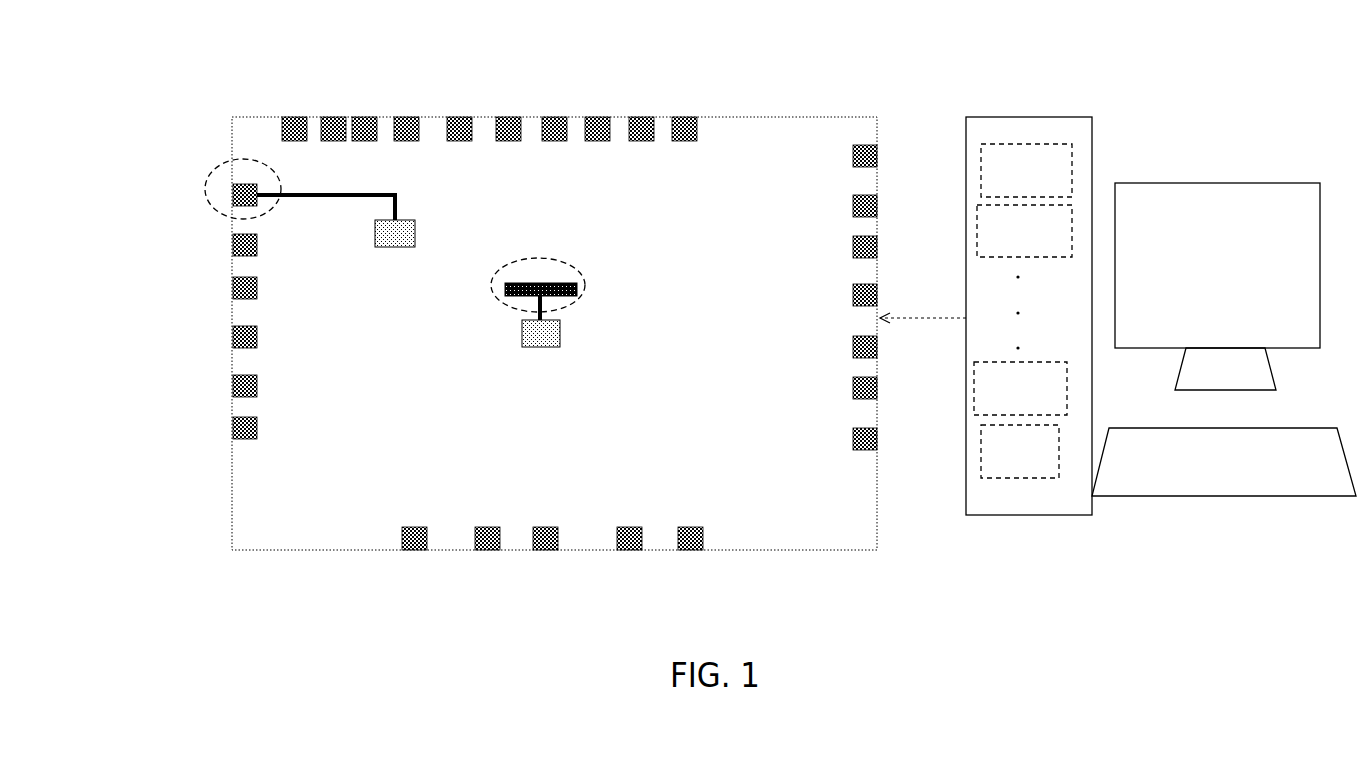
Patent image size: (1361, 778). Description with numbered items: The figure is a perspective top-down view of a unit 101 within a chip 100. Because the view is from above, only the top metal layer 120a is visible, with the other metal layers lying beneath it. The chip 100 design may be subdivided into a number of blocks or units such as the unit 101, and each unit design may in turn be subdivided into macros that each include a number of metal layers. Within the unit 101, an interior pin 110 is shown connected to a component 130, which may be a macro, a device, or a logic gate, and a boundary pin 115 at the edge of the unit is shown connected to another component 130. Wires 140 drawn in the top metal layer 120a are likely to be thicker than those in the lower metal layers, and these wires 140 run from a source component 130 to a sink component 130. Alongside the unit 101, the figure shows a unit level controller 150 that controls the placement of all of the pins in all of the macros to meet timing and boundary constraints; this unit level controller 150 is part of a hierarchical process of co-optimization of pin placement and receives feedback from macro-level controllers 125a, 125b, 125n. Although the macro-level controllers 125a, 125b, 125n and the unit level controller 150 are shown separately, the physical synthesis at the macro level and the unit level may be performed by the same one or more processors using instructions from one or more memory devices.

The chip 100 is at (108, 82).
The unit 101 is at (841, 527).
The top metal layer 120a is at (257, 500).
The boundary pin 115 is at (223, 245).
The wires 140 is at (403, 202).
The interior pin 110 is at (487, 295).
The component 130 is at (508, 345).
The macro-level controller 125a is at (1026, 170).
The macro-level controller 125b is at (1024, 231).
The macro-level controller 125n is at (1020, 388).
The unit level controller 150 is at (1020, 451).